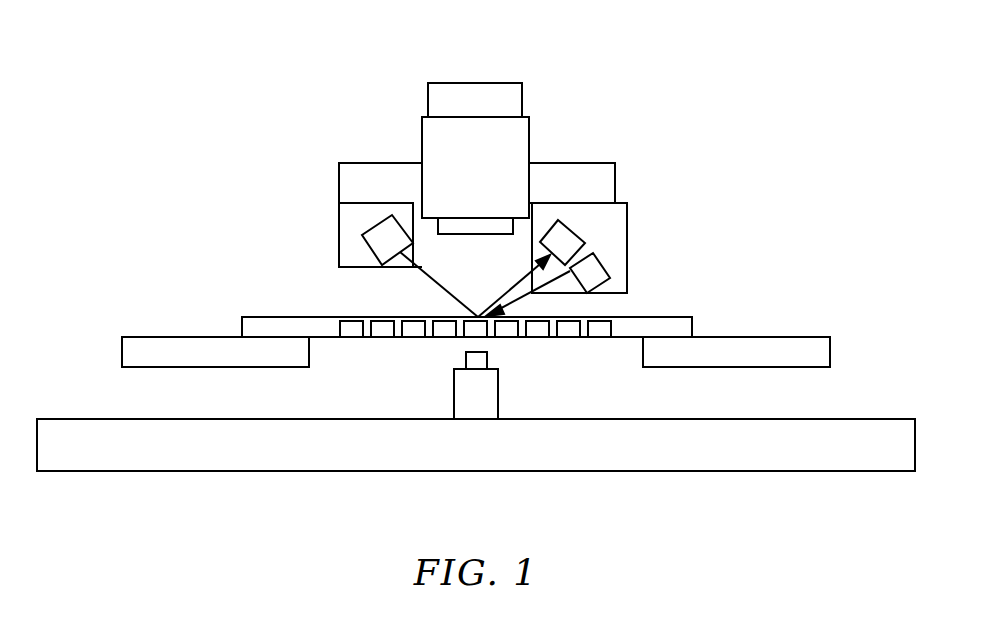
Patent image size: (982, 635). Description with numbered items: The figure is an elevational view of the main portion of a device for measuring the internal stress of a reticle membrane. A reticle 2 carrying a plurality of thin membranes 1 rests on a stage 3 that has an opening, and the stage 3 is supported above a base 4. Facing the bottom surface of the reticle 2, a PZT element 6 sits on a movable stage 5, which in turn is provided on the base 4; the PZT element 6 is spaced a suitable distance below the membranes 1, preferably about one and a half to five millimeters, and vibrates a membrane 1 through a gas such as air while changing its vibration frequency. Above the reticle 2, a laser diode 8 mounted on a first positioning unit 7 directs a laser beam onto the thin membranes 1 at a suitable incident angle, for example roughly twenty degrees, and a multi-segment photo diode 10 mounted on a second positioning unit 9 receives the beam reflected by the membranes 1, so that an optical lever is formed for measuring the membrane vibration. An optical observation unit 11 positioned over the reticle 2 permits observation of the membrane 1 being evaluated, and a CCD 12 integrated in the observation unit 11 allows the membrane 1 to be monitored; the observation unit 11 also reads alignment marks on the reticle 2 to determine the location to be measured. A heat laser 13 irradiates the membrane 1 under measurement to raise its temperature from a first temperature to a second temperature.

The thin membranes 1 is at (478, 320).
The reticle 2 is at (672, 318).
The stage 3 is at (735, 336).
The base 4 is at (866, 420).
The movable stage 5 is at (498, 390).
The PZT element 6 is at (487, 358).
The first positioning unit 7 is at (343, 238).
The laser diode 8 is at (375, 232).
The second positioning unit 9 is at (612, 177).
The multi-segment photo diode 10 is at (568, 235).
The optical observation unit 11 is at (523, 97).
The CCD 12 is at (475, 84).
The heat laser 13 is at (598, 272).